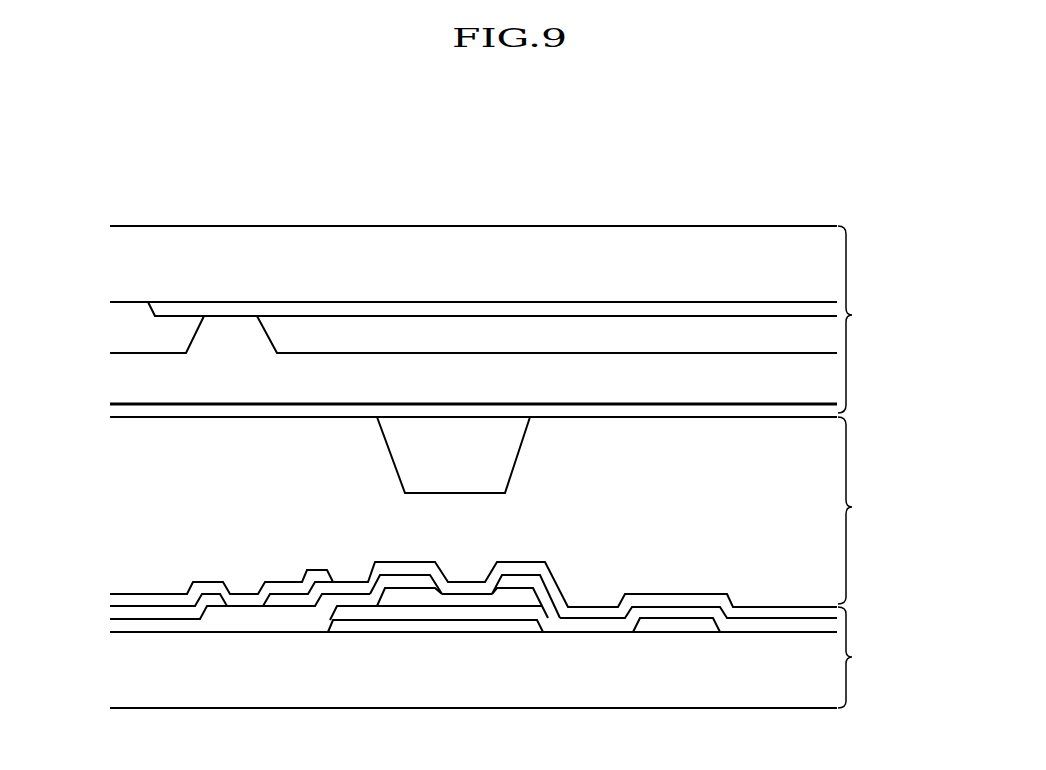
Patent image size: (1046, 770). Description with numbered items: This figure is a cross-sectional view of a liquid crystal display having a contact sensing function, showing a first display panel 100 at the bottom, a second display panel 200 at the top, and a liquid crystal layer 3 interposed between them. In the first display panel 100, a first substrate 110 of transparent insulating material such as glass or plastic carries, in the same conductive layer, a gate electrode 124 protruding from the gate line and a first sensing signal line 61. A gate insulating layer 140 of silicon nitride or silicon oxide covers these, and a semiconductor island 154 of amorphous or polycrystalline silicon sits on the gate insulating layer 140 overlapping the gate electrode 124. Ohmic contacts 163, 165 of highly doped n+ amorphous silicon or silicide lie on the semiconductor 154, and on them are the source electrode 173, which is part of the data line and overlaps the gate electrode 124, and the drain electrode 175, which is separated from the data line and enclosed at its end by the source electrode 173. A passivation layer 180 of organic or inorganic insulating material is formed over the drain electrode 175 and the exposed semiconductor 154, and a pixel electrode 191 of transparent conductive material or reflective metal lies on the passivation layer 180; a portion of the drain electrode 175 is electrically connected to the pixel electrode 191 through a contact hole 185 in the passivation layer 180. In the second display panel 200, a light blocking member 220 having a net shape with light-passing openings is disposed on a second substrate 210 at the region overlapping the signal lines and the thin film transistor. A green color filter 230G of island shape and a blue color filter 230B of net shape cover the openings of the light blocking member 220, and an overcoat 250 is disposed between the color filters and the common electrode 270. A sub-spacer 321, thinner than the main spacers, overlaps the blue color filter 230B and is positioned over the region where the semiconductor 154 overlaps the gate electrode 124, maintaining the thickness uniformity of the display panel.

The liquid crystal layer 3 is at (854, 510).
The first sensing signal line 61 is at (673, 625).
The first display panel 100 is at (864, 657).
The first substrate 110 is at (225, 692).
The gate electrode 124 is at (351, 626).
The gate insulating layer 140 is at (757, 627).
The semiconductor island 154 is at (468, 600).
The ohmic contact 163 is at (520, 590).
The ohmic contact 165 is at (408, 588).
The source electrode 173 is at (517, 580).
The drain electrode 175 is at (405, 580).
The passivation layer 180 is at (807, 612).
The contact hole 185 is at (230, 594).
The pixel electrode 191 is at (317, 578).
The second display panel 200 is at (865, 319).
The second substrate 210 is at (464, 240).
The light blocking member 220 is at (230, 308).
The green color filter 230G is at (151, 338).
The blue color filter 230B is at (307, 338).
The overcoat 250 is at (732, 382).
The common electrode 270 is at (637, 411).
The sub-spacer 321 is at (497, 457).